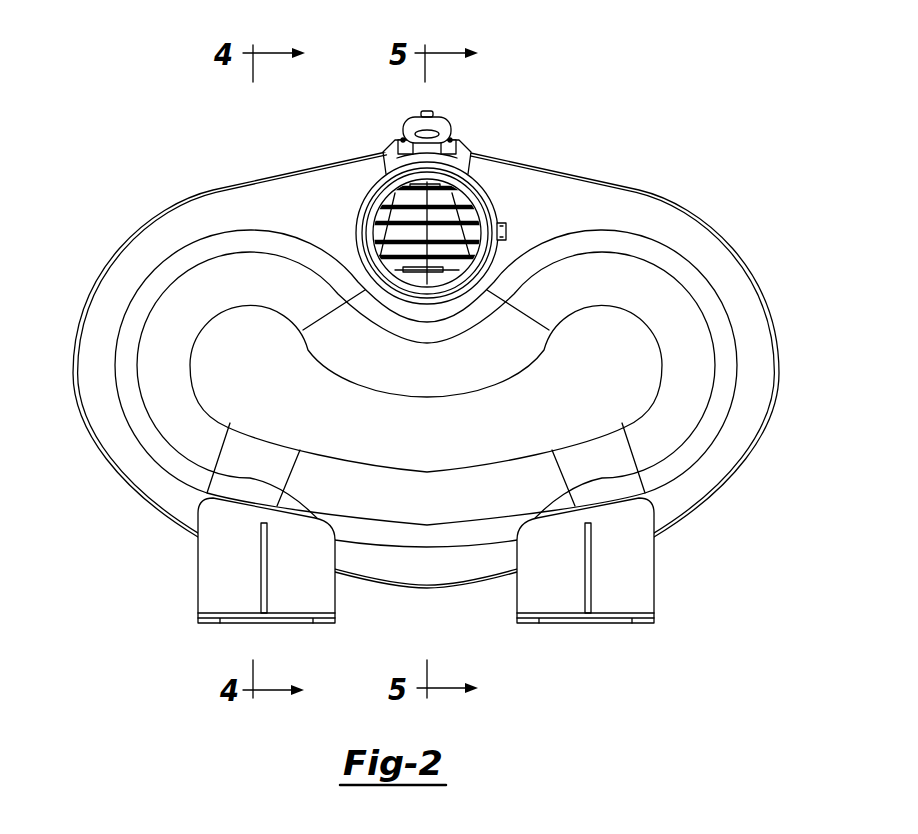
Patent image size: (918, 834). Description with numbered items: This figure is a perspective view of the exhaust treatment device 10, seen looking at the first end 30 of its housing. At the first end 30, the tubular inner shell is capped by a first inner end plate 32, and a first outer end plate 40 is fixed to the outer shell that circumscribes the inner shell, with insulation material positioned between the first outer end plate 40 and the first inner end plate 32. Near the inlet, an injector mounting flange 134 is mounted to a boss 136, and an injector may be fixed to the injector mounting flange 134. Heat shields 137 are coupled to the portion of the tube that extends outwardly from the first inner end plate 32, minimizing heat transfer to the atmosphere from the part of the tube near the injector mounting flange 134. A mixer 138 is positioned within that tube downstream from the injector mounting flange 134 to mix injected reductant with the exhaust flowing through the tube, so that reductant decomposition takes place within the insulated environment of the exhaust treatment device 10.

The exhaust treatment device 10 is at (168, 111).
The first end 30 is at (718, 522).
The first inner end plate 32 is at (645, 188).
The first outer end plate 40 is at (703, 253).
The injector mounting flange 134 is at (437, 123).
The boss 136 is at (397, 147).
The heat shields 137 is at (357, 210).
The mixer 138 is at (442, 248).